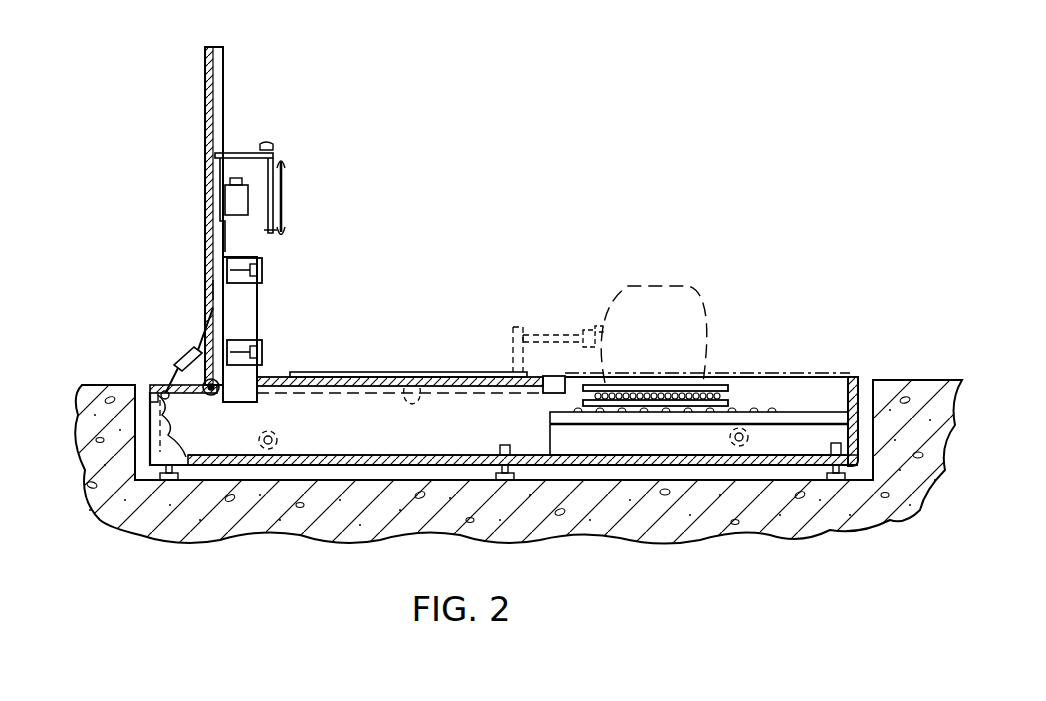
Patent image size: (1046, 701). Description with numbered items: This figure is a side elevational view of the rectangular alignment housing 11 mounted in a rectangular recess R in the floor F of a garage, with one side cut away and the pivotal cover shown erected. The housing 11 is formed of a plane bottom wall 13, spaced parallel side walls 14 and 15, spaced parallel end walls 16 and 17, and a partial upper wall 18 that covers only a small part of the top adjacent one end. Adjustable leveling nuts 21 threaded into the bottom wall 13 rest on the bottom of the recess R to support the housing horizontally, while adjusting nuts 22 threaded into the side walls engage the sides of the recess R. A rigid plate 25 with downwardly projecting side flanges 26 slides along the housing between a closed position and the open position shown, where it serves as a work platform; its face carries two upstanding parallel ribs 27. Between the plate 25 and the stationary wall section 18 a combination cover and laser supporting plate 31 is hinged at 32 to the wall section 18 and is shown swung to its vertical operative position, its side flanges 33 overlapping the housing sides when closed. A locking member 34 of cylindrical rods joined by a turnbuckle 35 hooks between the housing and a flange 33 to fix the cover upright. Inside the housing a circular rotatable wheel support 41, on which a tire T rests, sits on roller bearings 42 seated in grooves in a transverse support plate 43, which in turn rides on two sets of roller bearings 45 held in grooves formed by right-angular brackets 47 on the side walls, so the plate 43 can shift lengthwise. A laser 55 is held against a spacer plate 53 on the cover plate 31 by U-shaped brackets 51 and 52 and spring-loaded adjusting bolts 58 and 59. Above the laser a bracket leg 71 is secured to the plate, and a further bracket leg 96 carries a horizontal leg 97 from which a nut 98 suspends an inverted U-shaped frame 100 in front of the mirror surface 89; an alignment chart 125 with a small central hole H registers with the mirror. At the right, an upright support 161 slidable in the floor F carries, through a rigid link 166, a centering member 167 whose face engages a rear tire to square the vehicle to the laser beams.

The alignment housing 11 is at (450, 338).
The bottom wall 13 is at (365, 464).
The side wall 14 is at (190, 466).
The side wall 15 is at (350, 407).
The end wall 16 is at (135, 440).
The end wall 17 is at (855, 377).
The partial upper wall 18 is at (160, 385).
The leveling nuts 21 is at (166, 482).
The adjusting nuts 22 is at (272, 449).
The rigid plate 25 is at (545, 392).
The side flanges 26 is at (412, 386).
The ribs 27 is at (475, 372).
The cover and laser supporting plate 31 is at (205, 100).
The hinge 32 is at (214, 396).
The side flanges 33 is at (224, 60).
The locking member 34 is at (200, 340).
The turnbuckle 35 is at (185, 358).
The rotatable wheel support 41 is at (700, 385).
The roller bearings 42 is at (730, 400).
The support plate 43 is at (735, 404).
The roller bearings 45 is at (645, 411).
The right-angular brackets 47 is at (607, 438).
The U-shaped bracket 51 is at (262, 277).
The U-shaped bracket 52 is at (262, 347).
The spacer plate 53 is at (212, 290).
The laser 55 is at (257, 306).
The adjusting bolts 58 is at (262, 266).
The adjusting bolts 59 is at (262, 354).
The bracket leg 71 is at (220, 228).
The mirror surface 89 is at (236, 196).
The bracket leg 96 is at (213, 165).
The bracket leg 97 is at (240, 152).
The nut 98 is at (273, 146).
The U-shaped frame 100 is at (284, 231).
The alignment chart 125 is at (284, 172).
The upright support 161 is at (513, 330).
The rigid link 166 is at (552, 335).
The centering member 167 is at (600, 325).
The floor F is at (895, 380).
The hole H is at (283, 200).
The recess R is at (736, 472).
The tire T is at (700, 298).